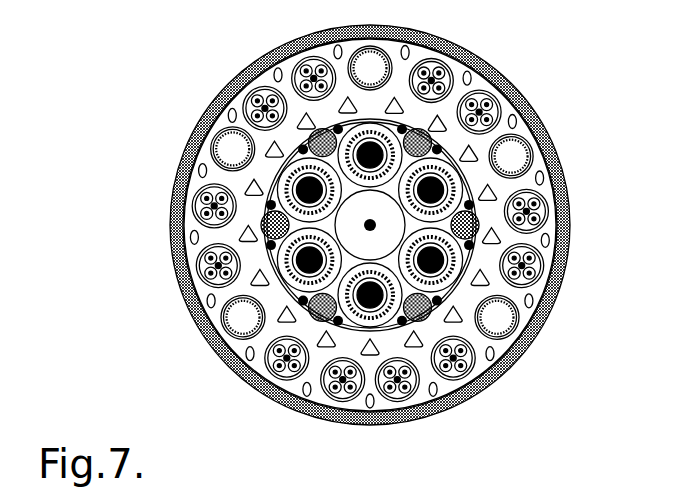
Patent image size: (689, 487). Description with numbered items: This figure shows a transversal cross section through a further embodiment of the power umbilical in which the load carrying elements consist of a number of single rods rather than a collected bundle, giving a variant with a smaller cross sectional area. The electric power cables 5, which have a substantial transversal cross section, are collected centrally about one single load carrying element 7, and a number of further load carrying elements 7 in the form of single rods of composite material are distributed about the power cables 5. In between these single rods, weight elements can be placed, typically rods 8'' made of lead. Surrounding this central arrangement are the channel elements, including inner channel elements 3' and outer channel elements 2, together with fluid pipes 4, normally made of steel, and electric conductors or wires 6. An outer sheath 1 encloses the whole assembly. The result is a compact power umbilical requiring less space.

The outer sheath 1 is at (572, 214).
The outer channel elements 2 is at (458, 382).
The inner channel elements 3' is at (392, 226).
The fluid pipes 4 is at (215, 158).
The electric power cables 5 is at (445, 190).
The electric conductors/wires 6 is at (212, 270).
The load carrying element 7 is at (437, 149).
The rods made of lead 8'' is at (454, 225).